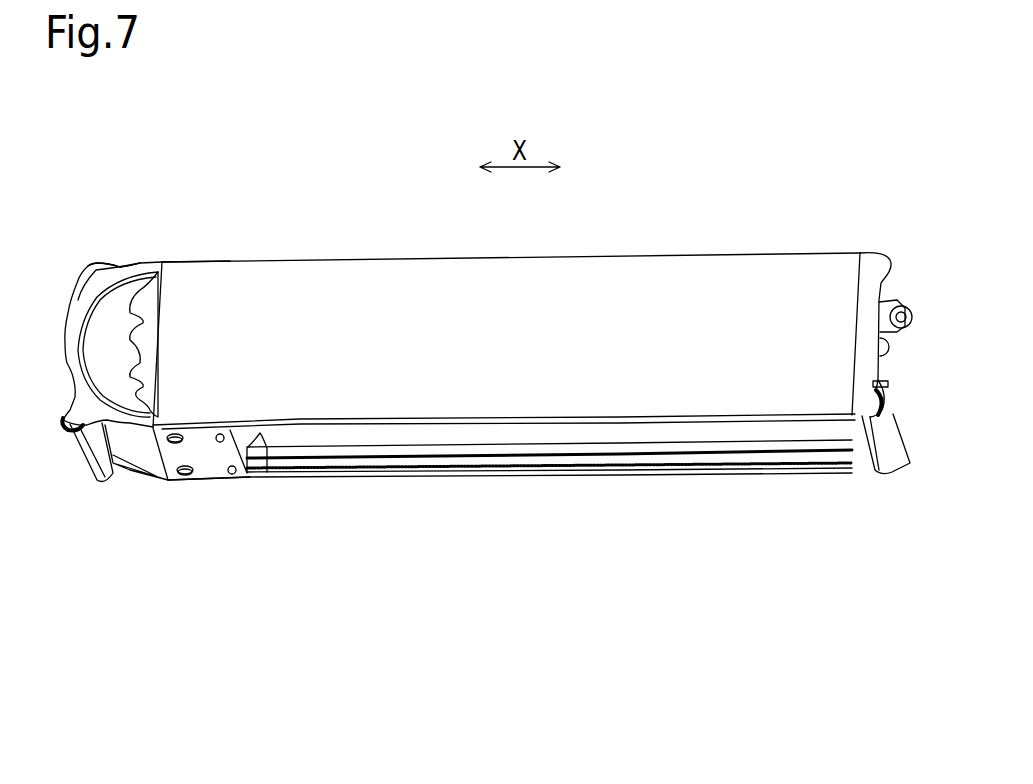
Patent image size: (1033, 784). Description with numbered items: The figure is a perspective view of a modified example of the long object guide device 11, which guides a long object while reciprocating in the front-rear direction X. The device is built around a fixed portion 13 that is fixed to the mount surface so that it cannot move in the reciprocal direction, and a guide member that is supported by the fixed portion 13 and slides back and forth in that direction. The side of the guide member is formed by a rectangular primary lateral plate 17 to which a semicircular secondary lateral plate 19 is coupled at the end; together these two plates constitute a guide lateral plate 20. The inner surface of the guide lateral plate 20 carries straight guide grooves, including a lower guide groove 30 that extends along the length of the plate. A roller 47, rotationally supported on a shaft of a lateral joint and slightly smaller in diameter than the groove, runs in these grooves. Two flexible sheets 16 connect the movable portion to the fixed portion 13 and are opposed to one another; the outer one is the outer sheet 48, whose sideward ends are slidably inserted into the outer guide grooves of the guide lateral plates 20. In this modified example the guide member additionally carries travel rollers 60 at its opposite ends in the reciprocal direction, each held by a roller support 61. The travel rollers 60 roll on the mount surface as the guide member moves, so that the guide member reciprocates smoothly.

The long object guide device 11 is at (859, 165).
The fixed portion 13 is at (217, 467).
The sheets 16 is at (187, 478).
The primary lateral plates 17 is at (196, 235).
The secondary lateral plates 19 is at (140, 262).
The guide lateral plates 20 is at (159, 210).
The lower guide groove 30 is at (357, 437).
The roller 47 is at (273, 472).
The outer sheet 48 is at (140, 453).
The travel rollers 60 is at (82, 460).
The roller supports 61 is at (77, 412).